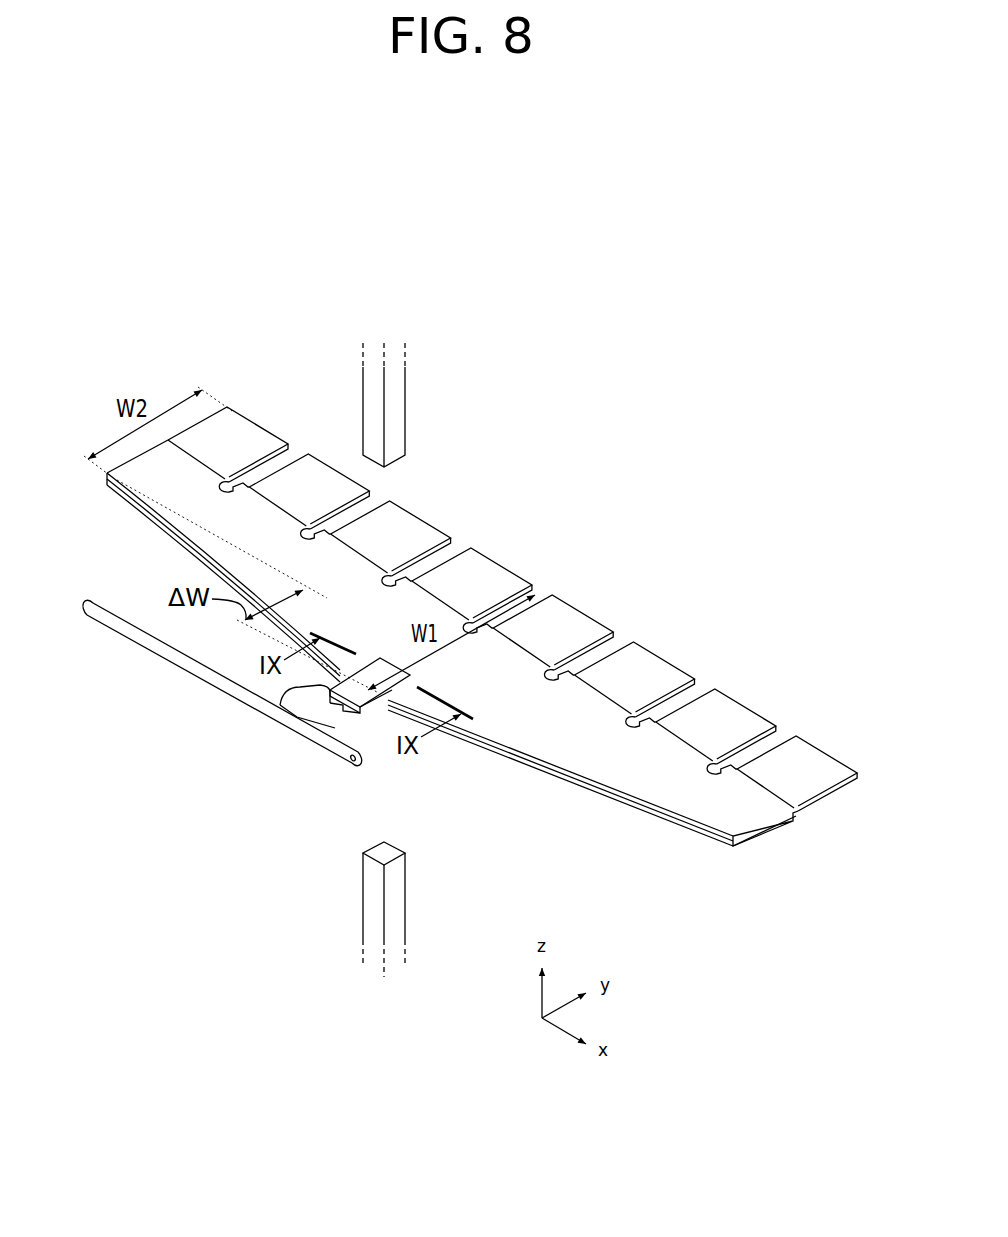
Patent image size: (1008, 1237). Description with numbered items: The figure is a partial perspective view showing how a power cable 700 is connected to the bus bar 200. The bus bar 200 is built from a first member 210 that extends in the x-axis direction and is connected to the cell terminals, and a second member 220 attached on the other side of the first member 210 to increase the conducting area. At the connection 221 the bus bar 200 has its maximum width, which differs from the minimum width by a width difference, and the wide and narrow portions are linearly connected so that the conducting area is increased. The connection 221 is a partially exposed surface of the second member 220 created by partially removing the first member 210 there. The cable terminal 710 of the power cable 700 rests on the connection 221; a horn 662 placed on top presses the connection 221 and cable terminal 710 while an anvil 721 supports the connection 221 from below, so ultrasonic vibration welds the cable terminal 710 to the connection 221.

The bus bar 200 is at (482, 598).
The first member 210 is at (678, 814).
The second member 220 is at (632, 804).
The connection 221 is at (390, 688).
The horn 662 is at (398, 416).
The power cable 700 is at (165, 653).
The cable terminal 710 is at (325, 683).
The anvil 721 is at (400, 887).